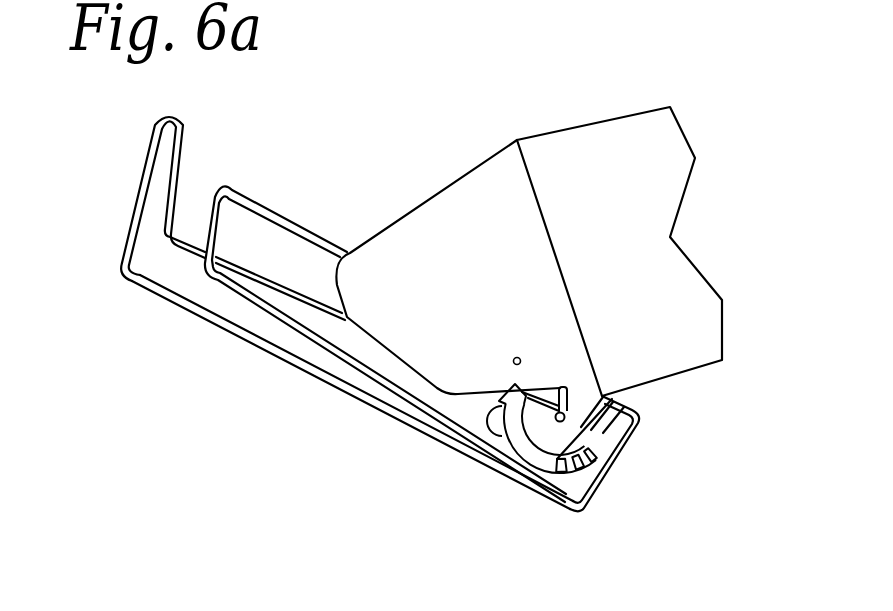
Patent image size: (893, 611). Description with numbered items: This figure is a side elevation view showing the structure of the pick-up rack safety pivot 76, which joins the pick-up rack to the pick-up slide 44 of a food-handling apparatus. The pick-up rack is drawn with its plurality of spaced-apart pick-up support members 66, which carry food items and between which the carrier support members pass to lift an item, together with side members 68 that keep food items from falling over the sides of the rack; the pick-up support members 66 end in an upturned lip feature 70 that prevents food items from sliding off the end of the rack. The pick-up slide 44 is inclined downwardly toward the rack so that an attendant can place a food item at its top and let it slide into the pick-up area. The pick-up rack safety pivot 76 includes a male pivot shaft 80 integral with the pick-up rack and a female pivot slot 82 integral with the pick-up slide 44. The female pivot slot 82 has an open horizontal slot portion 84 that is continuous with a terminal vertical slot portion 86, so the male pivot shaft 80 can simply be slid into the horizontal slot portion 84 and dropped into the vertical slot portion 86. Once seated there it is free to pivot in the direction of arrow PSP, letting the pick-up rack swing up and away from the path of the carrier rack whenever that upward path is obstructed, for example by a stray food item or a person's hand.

The pick-up slide 44 is at (615, 165).
The pick-up support members 66 is at (263, 347).
The side members 68 is at (287, 213).
The upturned lip feature 70 is at (155, 133).
The pick-up rack safety pivot 76 is at (548, 428).
The male pivot shaft 80 is at (613, 450).
The female pivot slot 82 is at (562, 400).
The horizontal slot portion 84 is at (493, 398).
The vertical slot portion 86 is at (566, 417).
The arrow PSP is at (537, 461).